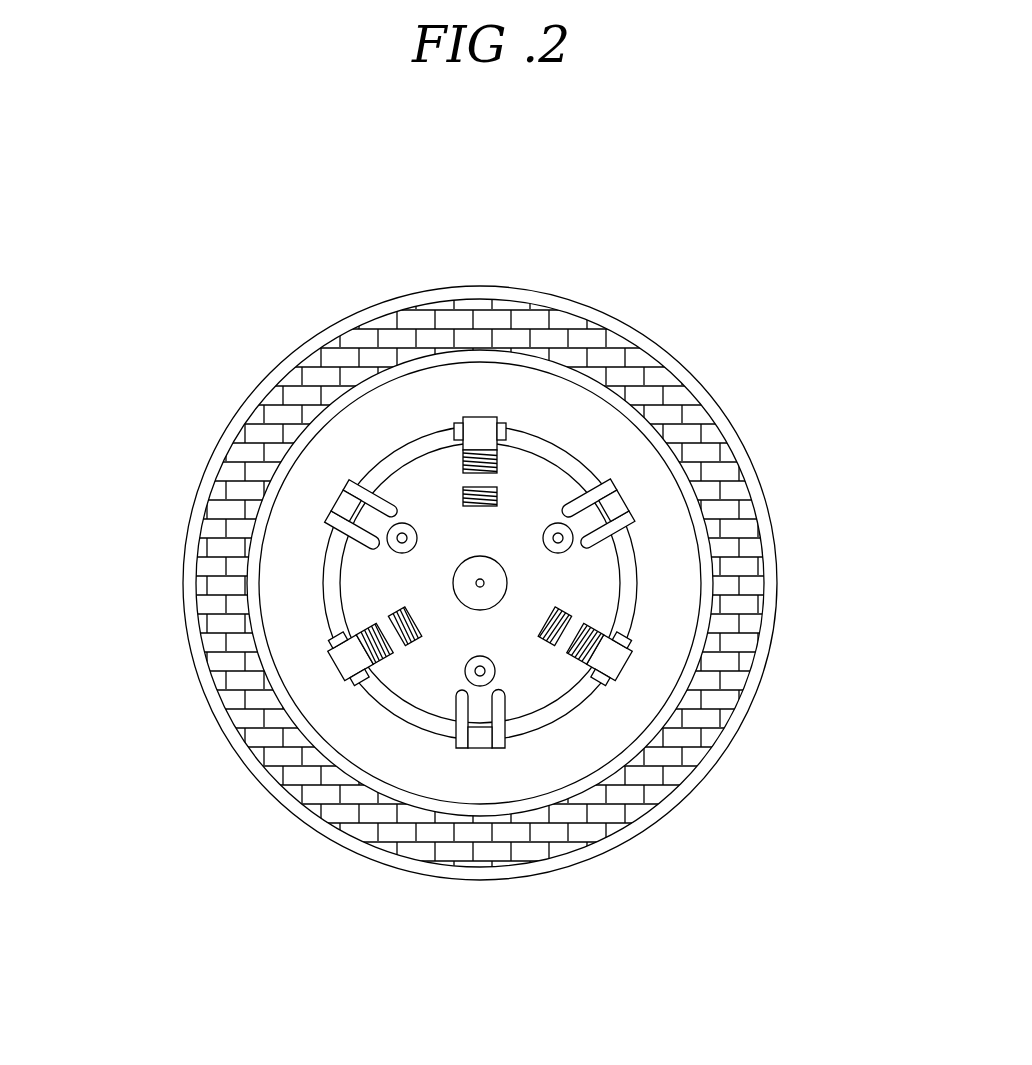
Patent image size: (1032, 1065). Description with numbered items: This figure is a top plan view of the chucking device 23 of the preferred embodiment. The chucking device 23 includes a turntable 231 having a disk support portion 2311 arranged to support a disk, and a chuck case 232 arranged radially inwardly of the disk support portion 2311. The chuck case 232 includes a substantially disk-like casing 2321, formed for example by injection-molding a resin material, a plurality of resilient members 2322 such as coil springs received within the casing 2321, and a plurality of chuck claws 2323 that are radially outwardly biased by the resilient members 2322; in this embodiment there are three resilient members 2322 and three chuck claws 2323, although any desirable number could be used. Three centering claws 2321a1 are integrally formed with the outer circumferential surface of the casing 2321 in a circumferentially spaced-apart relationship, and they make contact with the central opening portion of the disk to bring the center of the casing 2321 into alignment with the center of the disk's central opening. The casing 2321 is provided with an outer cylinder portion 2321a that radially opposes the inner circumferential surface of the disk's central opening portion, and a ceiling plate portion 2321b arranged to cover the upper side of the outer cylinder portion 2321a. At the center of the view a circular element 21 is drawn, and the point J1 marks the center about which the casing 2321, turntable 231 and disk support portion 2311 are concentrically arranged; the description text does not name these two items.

The chucking device 23 is at (110, 272).
The turntable 231 is at (282, 810).
The disk support portion 2311 is at (222, 548).
The chuck case 232 is at (567, 428).
The casing 2321 is at (415, 482).
The outer cylinder portion 2321a is at (637, 584).
The centering claws 2321a1 is at (333, 500).
The ceiling plate portion 2321b is at (433, 660).
The resilient members 2322 is at (487, 462).
The chuck claws 2323 is at (457, 413).
The shaft 21 is at (472, 574).
The rotation axis J1 is at (484, 583).